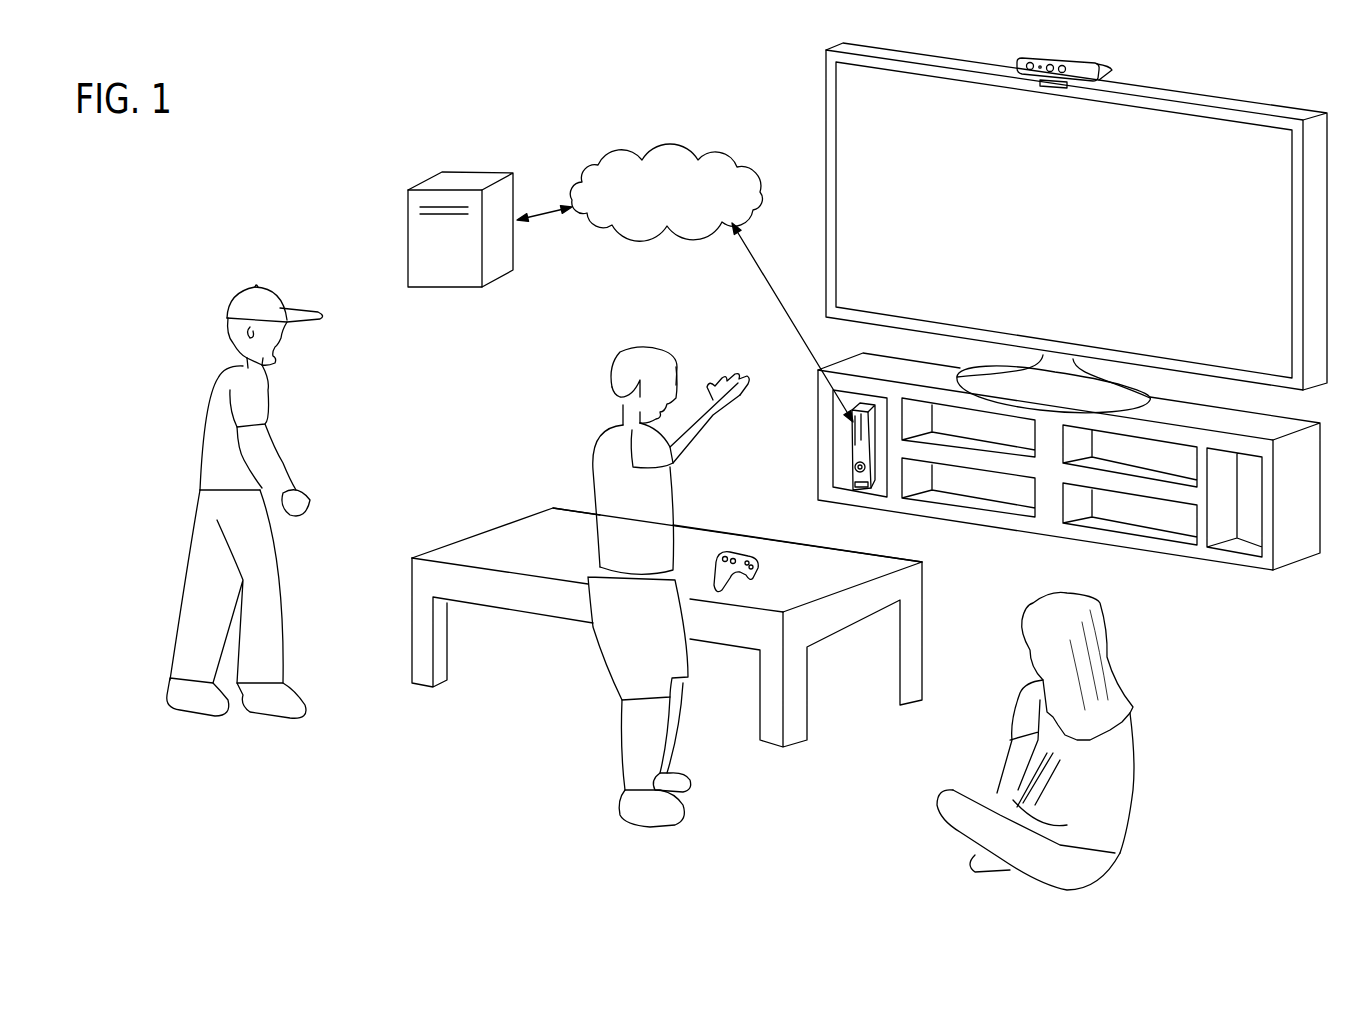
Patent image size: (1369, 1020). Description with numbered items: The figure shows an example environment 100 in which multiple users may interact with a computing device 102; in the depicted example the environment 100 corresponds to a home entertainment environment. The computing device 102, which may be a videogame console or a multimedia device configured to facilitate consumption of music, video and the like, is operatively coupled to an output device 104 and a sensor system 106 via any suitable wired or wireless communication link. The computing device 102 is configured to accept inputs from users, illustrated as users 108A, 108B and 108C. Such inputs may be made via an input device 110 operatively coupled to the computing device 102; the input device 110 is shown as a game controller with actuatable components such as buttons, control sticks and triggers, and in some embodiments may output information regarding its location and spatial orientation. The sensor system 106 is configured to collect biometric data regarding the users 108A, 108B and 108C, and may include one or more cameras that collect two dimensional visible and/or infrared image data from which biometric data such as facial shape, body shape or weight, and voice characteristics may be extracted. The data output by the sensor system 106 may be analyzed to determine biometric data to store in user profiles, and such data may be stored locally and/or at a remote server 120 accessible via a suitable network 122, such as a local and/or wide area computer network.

The environment 100 is at (352, 165).
The computing device 102 is at (850, 473).
The output device 104 is at (1243, 102).
The sensor system 106 is at (1083, 98).
The user 108A is at (253, 283).
The user 108B is at (638, 345).
The user 108C is at (1038, 603).
The input device 110 is at (762, 566).
The remote server 120 is at (503, 173).
The network 122 is at (687, 200).